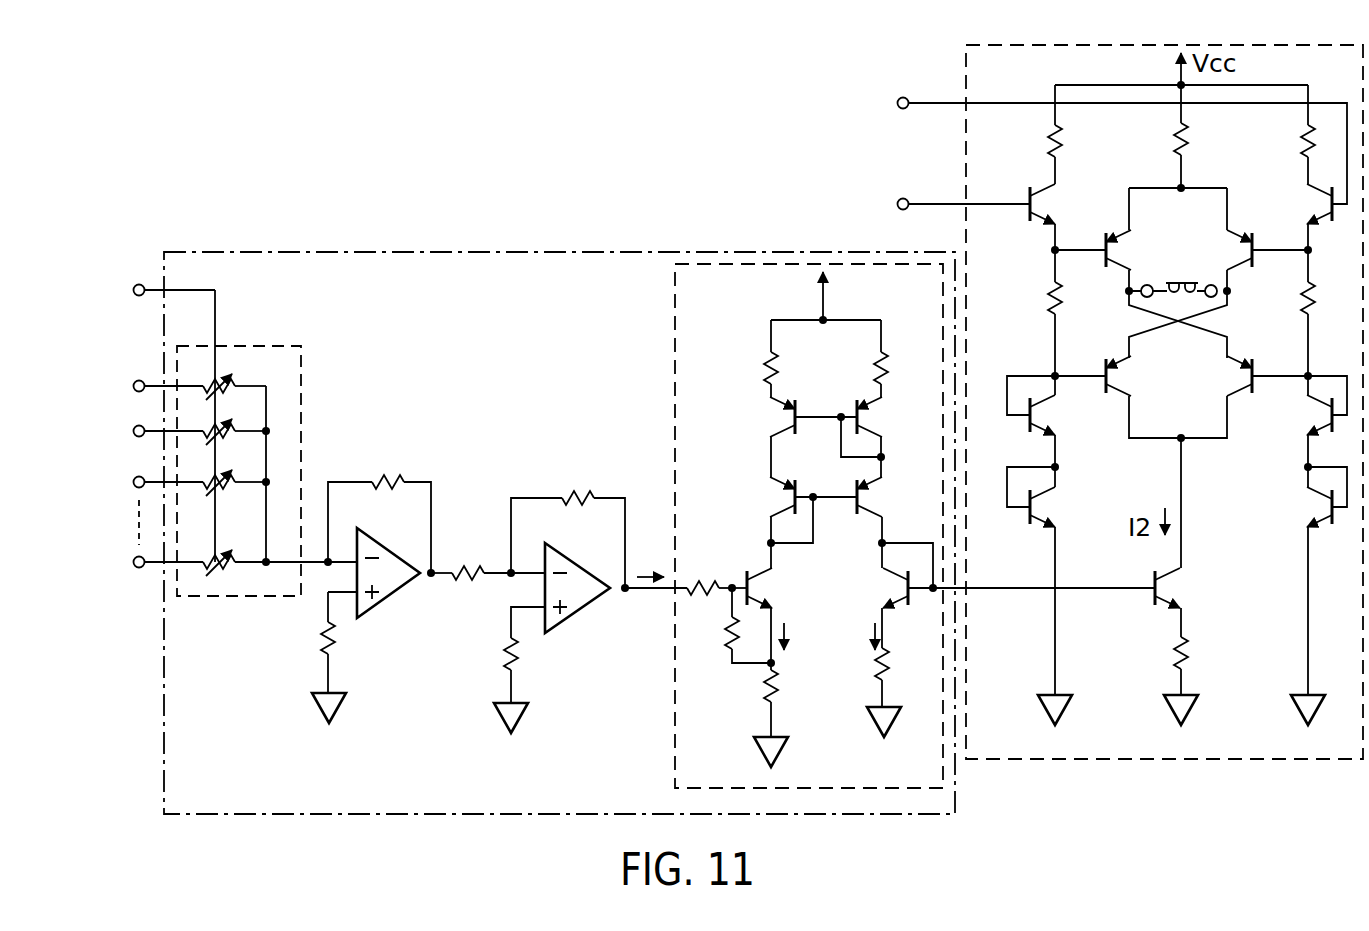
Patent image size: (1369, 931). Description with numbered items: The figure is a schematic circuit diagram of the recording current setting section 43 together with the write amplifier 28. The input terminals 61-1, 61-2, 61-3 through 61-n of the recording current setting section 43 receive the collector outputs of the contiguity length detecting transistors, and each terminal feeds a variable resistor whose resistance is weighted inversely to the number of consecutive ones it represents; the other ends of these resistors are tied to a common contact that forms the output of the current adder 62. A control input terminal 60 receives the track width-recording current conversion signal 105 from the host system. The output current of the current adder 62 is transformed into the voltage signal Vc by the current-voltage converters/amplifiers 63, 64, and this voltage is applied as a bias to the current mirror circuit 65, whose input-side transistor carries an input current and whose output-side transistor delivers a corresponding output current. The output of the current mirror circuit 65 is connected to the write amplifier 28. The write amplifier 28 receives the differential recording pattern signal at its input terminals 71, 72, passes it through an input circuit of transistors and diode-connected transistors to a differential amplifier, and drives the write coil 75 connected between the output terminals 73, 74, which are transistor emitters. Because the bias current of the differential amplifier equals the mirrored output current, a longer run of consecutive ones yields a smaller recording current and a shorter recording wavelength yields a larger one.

The recording current setting section 43 is at (624, 252).
The control input terminal 60 is at (132, 290).
The track width-recording current conversion signal 105 is at (218, 302).
The input terminal 61-1 is at (132, 386).
The input terminal 61-2 is at (132, 431).
The input terminal 61-3 is at (132, 482).
The input terminal 61-n is at (132, 562).
The current adder 62 is at (273, 471).
The current-voltage converter/amplifier 63 is at (397, 600).
The current-voltage converter/amplifier 64 is at (583, 613).
The current mirror circuit 65 is at (883, 526).
The write amplifier 28 is at (963, 71).
The input terminal 72 is at (897, 103).
The input terminal 71 is at (897, 204).
The write coil 75 is at (1179, 282).
The output terminal 73 is at (1143, 297).
The output terminal 74 is at (1215, 297).